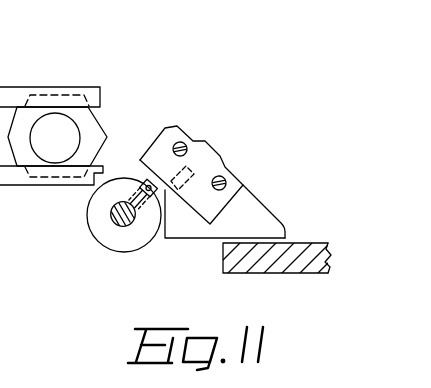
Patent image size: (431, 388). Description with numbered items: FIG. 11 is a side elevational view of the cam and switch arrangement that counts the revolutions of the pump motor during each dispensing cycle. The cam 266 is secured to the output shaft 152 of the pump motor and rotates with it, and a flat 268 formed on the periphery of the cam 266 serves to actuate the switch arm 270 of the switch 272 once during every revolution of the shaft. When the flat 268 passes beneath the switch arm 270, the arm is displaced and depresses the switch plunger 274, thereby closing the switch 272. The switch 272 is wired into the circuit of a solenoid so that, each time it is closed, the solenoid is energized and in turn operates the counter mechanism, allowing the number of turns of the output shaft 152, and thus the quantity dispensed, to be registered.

The output shaft 152 is at (113, 222).
The cam 266 is at (93, 213).
The flat 268 is at (165, 206).
The switch arm 270 is at (150, 181).
The switch 272 is at (213, 157).
The switch plunger 274 is at (183, 186).